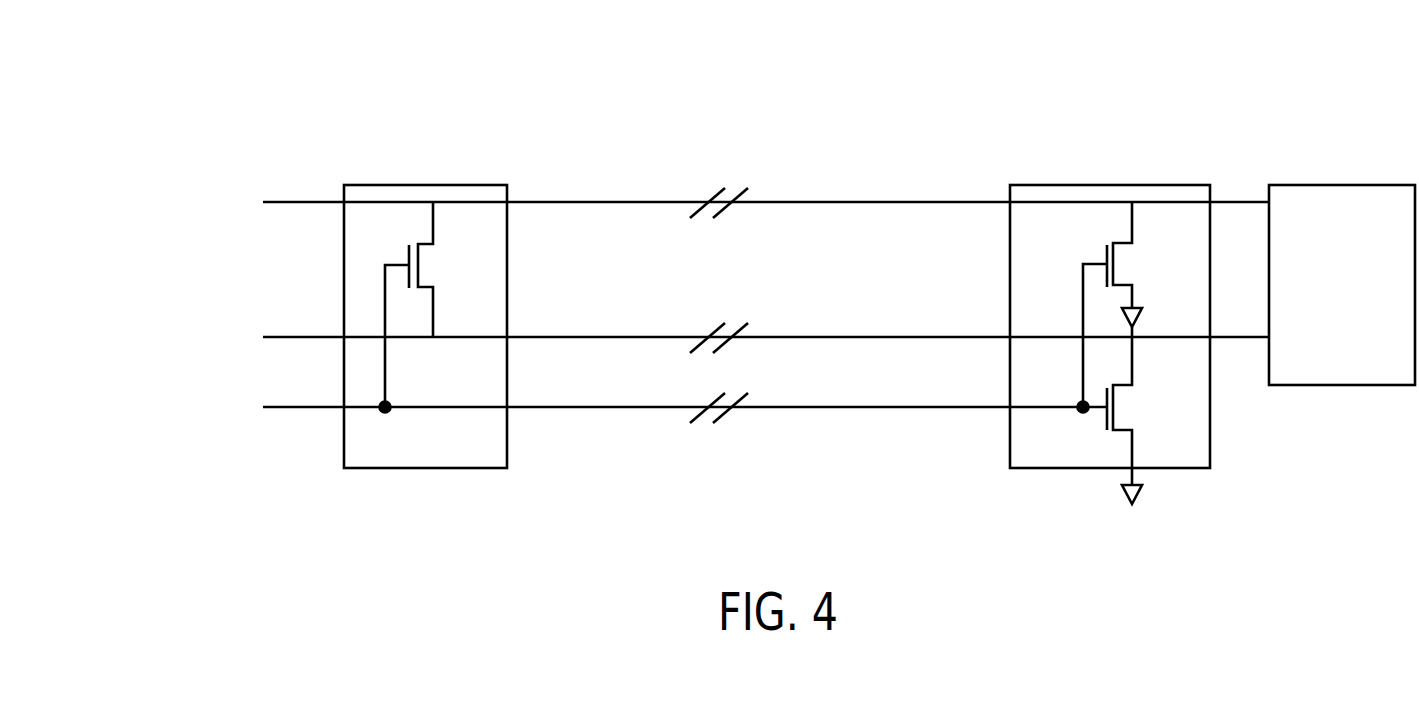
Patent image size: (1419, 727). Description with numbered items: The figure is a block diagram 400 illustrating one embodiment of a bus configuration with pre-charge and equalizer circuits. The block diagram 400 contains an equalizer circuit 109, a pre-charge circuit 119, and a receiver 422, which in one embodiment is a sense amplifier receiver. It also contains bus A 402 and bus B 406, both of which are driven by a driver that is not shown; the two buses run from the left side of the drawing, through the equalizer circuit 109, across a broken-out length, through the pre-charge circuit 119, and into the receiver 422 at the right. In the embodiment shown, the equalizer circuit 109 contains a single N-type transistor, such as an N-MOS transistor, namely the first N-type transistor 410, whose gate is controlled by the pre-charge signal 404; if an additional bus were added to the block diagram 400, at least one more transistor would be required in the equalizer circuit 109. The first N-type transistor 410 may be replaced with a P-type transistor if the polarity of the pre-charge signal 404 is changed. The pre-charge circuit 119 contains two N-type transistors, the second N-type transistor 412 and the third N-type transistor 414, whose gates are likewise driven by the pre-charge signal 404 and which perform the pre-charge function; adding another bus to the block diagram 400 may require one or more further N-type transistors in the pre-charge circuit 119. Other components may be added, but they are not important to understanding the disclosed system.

The block diagram 400 is at (160, 49).
The bus A 402 is at (737, 213).
The bus B 406 is at (739, 351).
The pre-charge signal 404 is at (612, 440).
The equalizer circuit 109 is at (426, 450).
The pre-charge circuit 119 is at (1063, 452).
The N-type transistor N1 410 is at (433, 304).
The N-type transistor N2 412 is at (1135, 304).
The N-type transistor N3 414 is at (1146, 420).
The receiver 422 is at (1318, 299).